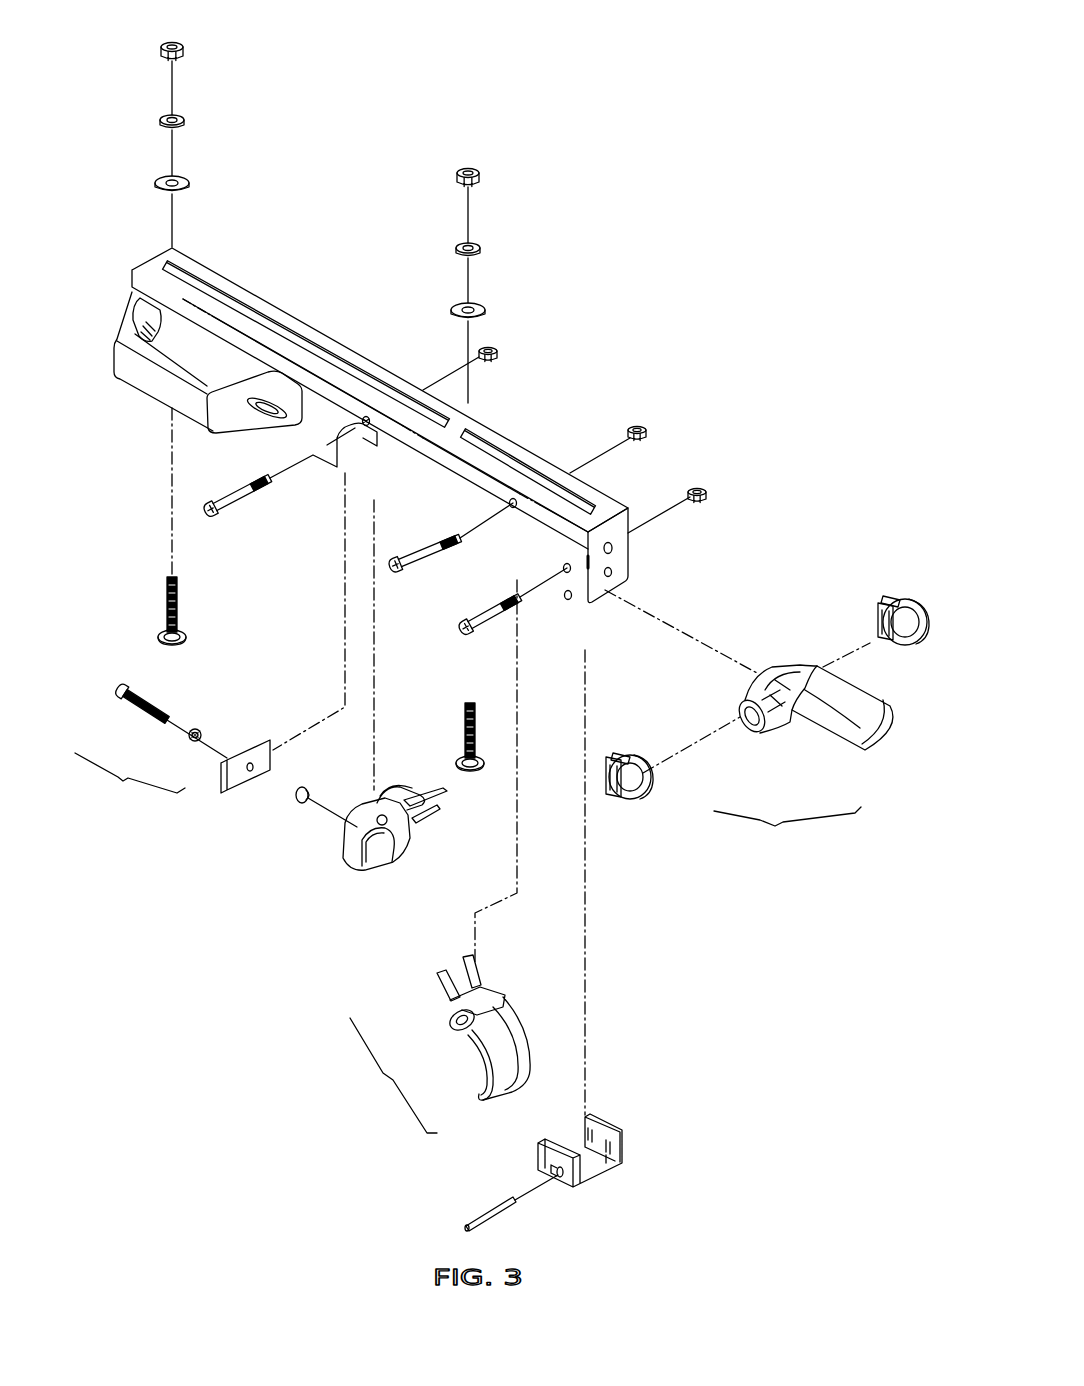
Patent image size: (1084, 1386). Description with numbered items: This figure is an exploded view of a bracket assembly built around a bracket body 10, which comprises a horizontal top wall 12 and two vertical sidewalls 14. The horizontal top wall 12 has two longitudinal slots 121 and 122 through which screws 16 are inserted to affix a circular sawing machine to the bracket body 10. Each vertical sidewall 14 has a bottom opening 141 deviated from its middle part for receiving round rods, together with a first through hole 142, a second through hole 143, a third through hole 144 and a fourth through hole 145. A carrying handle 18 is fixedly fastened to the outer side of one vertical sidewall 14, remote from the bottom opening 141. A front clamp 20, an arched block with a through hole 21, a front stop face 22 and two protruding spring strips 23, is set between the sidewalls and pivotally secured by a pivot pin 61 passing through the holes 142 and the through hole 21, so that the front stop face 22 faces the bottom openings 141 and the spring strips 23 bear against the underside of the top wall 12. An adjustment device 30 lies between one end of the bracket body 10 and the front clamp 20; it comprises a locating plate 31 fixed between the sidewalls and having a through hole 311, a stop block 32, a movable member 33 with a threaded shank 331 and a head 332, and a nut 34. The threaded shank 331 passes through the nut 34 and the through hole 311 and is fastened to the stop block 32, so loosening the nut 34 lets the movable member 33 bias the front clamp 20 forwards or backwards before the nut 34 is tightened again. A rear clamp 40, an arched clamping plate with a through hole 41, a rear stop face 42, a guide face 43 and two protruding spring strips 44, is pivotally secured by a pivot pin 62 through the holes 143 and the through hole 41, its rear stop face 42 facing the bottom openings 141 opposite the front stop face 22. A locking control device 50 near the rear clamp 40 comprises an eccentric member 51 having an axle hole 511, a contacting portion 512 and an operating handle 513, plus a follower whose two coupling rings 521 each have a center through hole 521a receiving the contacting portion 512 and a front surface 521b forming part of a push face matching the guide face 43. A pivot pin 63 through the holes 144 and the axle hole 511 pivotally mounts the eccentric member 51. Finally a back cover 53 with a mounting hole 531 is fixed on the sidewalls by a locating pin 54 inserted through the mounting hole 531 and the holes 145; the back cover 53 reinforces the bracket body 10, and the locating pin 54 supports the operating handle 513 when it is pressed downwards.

The bracket body 10 is at (492, 428).
The horizontal top wall 12 is at (353, 343).
The longitudinal slot 121 is at (268, 322).
The longitudinal slot 122 is at (517, 467).
The vertical sidewall 14 is at (297, 438).
The bottom opening 141 is at (427, 475).
The first through hole 142 is at (365, 427).
The second through hole 143 is at (513, 507).
The third through hole 144 is at (567, 572).
The fourth through hole 145 is at (567, 600).
The screw 16 is at (167, 602).
The carrying handle 18 is at (147, 387).
The front clamp 20 is at (335, 861).
The through hole 21 is at (390, 845).
The front stop face 22 is at (378, 862).
The protruding spring strip 23 is at (435, 802).
The adjustment device 30 is at (180, 806).
The locating plate 31 is at (223, 783).
The through hole 311 is at (252, 773).
The stop block 32 is at (315, 792).
The movable member 33 is at (151, 767).
The threaded shank 331 is at (160, 723).
The head 332 is at (122, 710).
The nut 34 is at (200, 727).
The rear clamp 40 is at (389, 1075).
The through hole 41 is at (455, 1018).
The rear stop face 42 is at (488, 1062).
The guide face 43 is at (522, 1027).
The protruding spring strip 44 is at (440, 988).
The locking control device 50 is at (850, 833).
The eccentric member 51 is at (787, 832).
The axle hole 511 is at (740, 733).
The contacting portion 512 is at (770, 728).
The operating handle 513 is at (845, 725).
The coupling ring 521 is at (650, 795).
The center through hole 521a is at (622, 800).
The front surface 521b is at (611, 768).
The back cover 53 is at (600, 1176).
The mounting hole 531 is at (560, 1178).
The locating pin 54 is at (488, 1212).
The pivot pin 61 is at (243, 500).
The pivot pin 62 is at (410, 572).
The pivot pin 63 is at (490, 618).